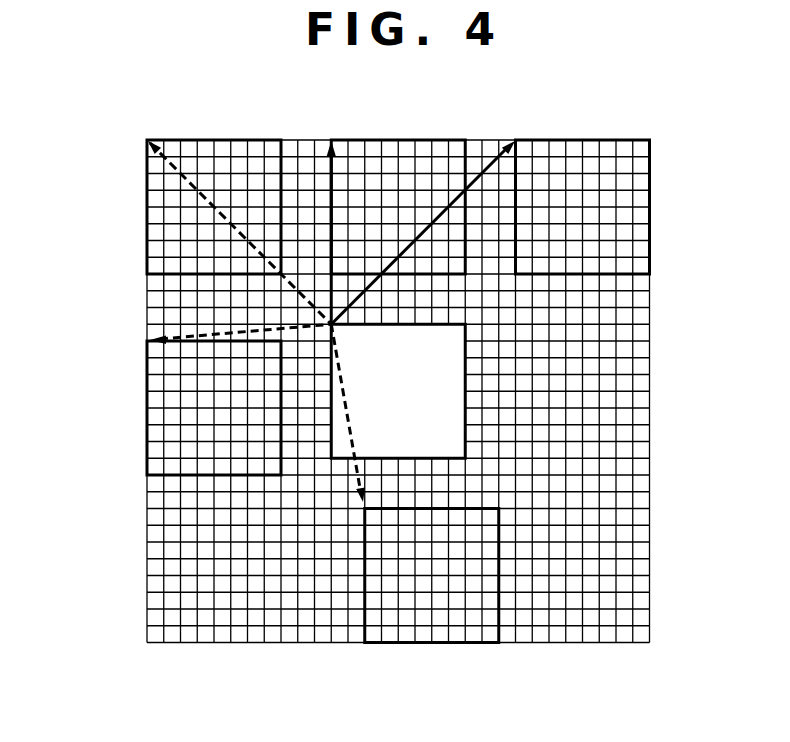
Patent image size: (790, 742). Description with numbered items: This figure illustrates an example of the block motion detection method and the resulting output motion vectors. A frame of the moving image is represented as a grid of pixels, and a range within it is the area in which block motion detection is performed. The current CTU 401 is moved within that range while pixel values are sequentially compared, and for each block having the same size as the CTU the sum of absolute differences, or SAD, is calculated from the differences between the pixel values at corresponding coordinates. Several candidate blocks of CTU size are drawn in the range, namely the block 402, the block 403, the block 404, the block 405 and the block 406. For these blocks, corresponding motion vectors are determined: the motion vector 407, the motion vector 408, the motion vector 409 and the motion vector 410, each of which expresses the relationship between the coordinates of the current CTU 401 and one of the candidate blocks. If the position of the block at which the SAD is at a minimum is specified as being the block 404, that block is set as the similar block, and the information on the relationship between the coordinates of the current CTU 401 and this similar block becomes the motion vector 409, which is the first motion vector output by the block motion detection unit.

The CTU 401 is at (443, 324).
The block 402 is at (223, 140).
The block 403 is at (412, 140).
The block 404 is at (573, 140).
The block 405 is at (147, 397).
The block 406 is at (427, 643).
The motion vector 407 is at (193, 170).
The motion vector 408 is at (336, 180).
The motion vector 409 is at (485, 160).
The motion vector 410 is at (200, 330).